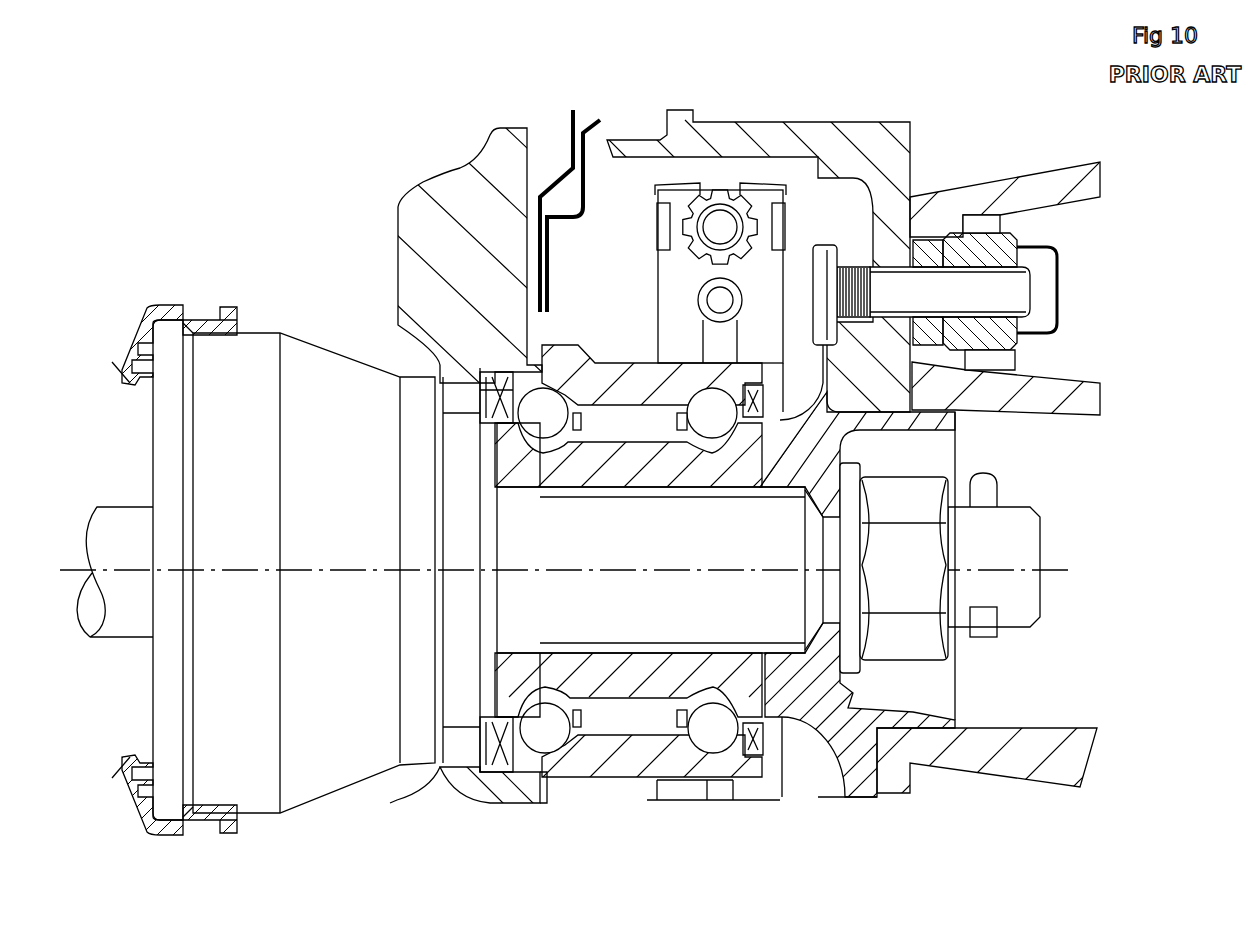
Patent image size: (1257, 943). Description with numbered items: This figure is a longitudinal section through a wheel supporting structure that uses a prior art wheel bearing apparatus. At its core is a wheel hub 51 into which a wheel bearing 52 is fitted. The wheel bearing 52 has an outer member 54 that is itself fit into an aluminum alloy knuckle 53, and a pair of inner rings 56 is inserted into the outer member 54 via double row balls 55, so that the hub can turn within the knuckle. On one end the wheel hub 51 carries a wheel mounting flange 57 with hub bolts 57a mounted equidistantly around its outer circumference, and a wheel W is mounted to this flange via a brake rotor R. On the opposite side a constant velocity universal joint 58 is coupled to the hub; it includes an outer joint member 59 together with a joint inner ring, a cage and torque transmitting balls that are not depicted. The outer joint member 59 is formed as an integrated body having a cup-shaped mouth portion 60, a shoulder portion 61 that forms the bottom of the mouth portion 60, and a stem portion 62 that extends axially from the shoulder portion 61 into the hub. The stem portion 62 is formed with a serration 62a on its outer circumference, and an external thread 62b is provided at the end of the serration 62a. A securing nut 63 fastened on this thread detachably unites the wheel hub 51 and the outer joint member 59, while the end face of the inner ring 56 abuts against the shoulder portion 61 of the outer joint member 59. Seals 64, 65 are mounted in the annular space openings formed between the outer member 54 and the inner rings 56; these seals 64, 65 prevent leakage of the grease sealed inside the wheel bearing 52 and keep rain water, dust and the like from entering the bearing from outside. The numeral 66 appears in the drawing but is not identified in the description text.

The wheel hub 51 is at (863, 433).
The wheel bearing 52 is at (592, 517).
The aluminum alloy knuckle 53 is at (468, 213).
The outer member 54 is at (640, 363).
The double row balls 55 is at (543, 423).
The inner rings 56 is at (667, 453).
The wheel mounting flange 57 is at (965, 277).
The hub bolts 57a is at (1000, 282).
The constant velocity universal joint 58 is at (273, 505).
The outer joint member 59 is at (357, 347).
The cup-shaped mouth portion 60 is at (243, 336).
The shoulder portion 61 is at (467, 417).
The stem portion 62 is at (780, 570).
The serration 62a is at (663, 657).
The external thread 62b is at (1010, 513).
The securing nut 63 is at (933, 643).
The seal 64 is at (765, 400).
The seal 65 is at (480, 733).
The seal 66 is at (463, 393).
The brake rotor R is at (860, 140).
The wheel W is at (1037, 183).